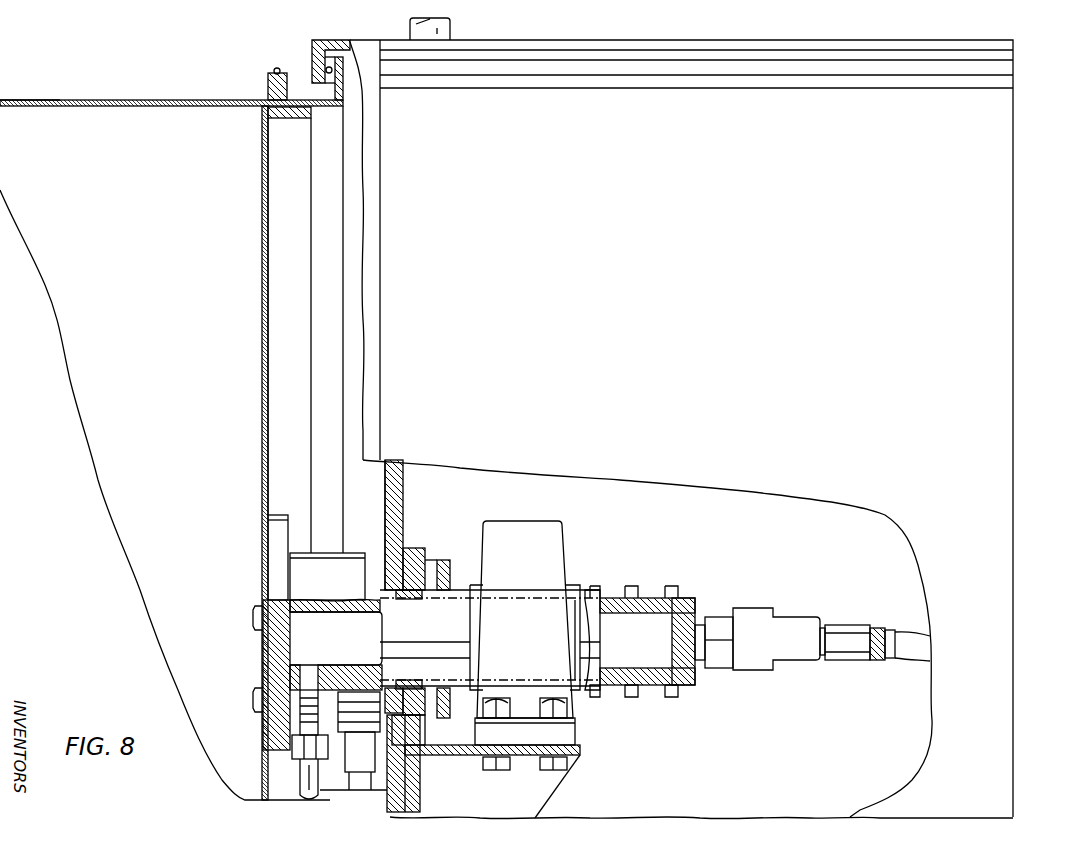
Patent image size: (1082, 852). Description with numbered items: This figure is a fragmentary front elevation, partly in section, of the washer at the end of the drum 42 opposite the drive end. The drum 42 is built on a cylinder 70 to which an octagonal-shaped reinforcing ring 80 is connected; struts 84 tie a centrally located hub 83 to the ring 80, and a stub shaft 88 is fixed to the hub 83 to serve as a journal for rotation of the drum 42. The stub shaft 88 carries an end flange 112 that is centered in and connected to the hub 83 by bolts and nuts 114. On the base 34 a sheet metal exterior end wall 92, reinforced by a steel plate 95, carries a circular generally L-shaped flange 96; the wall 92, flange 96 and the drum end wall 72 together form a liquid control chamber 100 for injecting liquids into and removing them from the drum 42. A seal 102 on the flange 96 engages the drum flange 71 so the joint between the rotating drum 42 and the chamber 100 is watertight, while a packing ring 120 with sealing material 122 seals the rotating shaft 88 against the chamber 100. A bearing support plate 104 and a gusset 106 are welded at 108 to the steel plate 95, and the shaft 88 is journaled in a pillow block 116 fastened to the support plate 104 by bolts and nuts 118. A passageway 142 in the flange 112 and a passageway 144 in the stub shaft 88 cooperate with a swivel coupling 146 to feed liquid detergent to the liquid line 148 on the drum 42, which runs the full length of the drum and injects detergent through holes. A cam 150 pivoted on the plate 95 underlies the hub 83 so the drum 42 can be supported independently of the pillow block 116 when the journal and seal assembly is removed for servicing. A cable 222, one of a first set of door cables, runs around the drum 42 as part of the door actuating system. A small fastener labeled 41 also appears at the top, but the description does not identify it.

The base 34 is at (1013, 295).
The bolt 41 is at (452, 28).
The drum 42 is at (52, 90).
The cylinder 70 is at (128, 99).
The drum flange 71 is at (345, 85).
The end wall 72 is at (262, 240).
The octagonal-shaped reinforcing ring 80 is at (270, 117).
The hub 83 is at (316, 557).
The struts 84 is at (277, 290).
The stub shaft 88 is at (490, 638).
The sheet metal exterior end wall 92 is at (393, 462).
The steel plate 95 is at (402, 490).
The circular generally L-shaped flange 96 is at (313, 70).
The liquid control chamber 100 is at (292, 345).
The seal 102 is at (313, 45).
The bearing support plate 104 is at (583, 752).
The gusset 106 is at (540, 793).
The weld 108 is at (420, 790).
The end flange 112 is at (290, 710).
The bolts and nuts 114 is at (256, 612).
The pillow block 116 is at (553, 550).
The bolts and nuts 118 is at (548, 698).
The packing ring 120 is at (425, 560).
The sealing material 122 is at (404, 598).
The passageway 142 is at (313, 680).
The passageway 144 is at (336, 632).
The swivel coupling 146 is at (760, 608).
The liquid line 148 is at (300, 778).
The cam 150 is at (352, 780).
The cable 222 is at (270, 72).